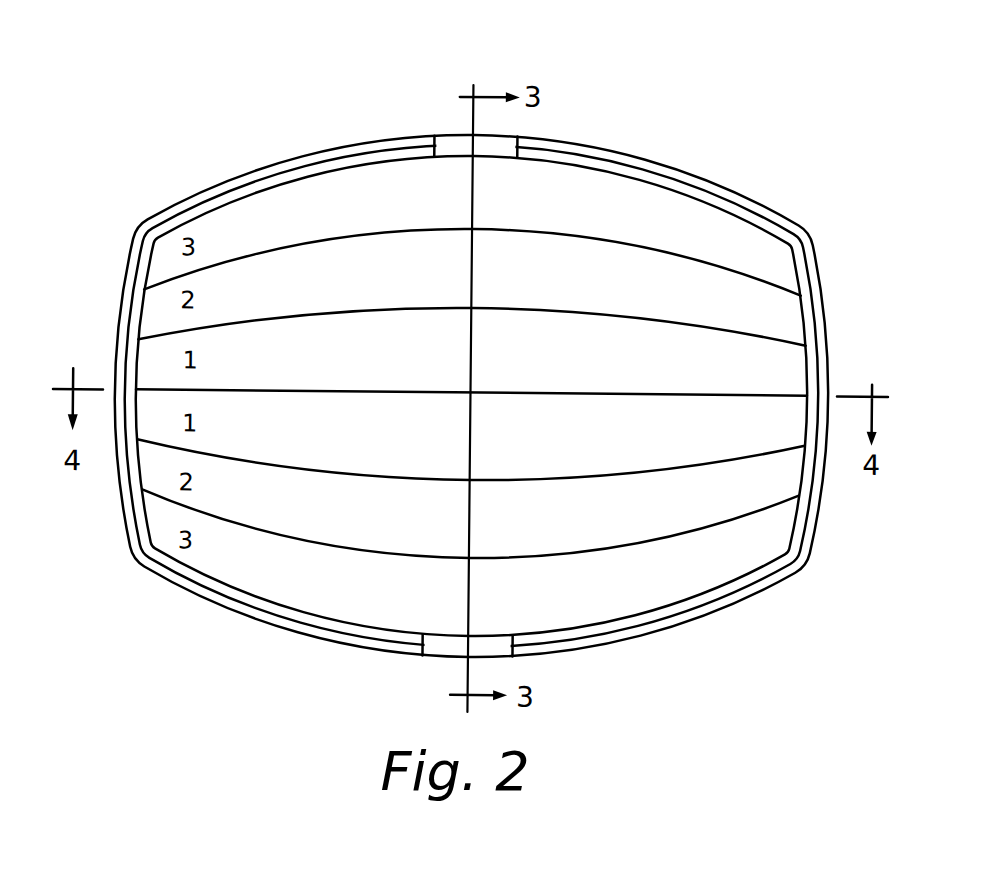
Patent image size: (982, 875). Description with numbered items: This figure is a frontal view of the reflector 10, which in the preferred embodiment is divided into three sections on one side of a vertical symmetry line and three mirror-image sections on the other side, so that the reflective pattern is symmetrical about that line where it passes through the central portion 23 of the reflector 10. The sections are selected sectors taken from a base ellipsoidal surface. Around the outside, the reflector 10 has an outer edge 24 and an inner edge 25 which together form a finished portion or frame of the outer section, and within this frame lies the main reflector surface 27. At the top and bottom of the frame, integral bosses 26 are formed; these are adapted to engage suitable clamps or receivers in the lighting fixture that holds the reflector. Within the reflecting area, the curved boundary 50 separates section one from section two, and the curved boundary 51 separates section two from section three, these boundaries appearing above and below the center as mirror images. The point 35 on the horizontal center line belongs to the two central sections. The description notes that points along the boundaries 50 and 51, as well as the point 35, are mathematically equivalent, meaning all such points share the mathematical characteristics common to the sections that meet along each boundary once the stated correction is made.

The reflector 10 is at (471, 402).
The central portion 23 is at (470, 392).
The outer edge 24 is at (346, 646).
The inner edge 25 is at (297, 607).
The integral bosses 26 is at (456, 142).
The main reflector surface 27 is at (328, 189).
The point for sections 1-1 35 is at (608, 392).
The boundary between sections 1 and 2 50 is at (610, 313).
The boundary between sections 2 and 3 51 is at (611, 240).